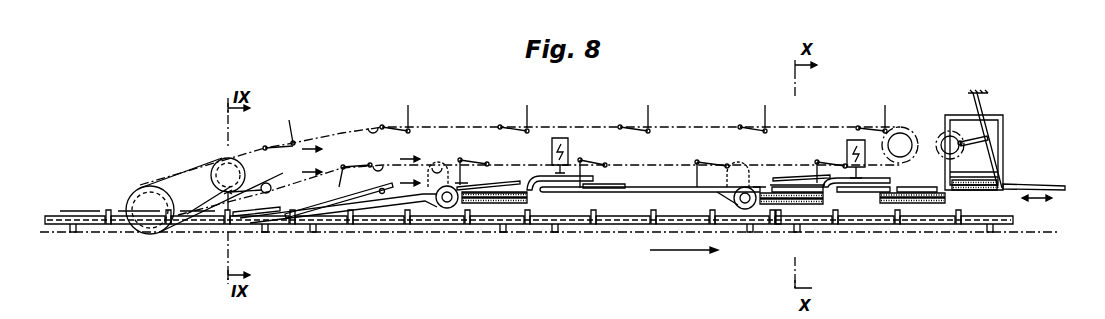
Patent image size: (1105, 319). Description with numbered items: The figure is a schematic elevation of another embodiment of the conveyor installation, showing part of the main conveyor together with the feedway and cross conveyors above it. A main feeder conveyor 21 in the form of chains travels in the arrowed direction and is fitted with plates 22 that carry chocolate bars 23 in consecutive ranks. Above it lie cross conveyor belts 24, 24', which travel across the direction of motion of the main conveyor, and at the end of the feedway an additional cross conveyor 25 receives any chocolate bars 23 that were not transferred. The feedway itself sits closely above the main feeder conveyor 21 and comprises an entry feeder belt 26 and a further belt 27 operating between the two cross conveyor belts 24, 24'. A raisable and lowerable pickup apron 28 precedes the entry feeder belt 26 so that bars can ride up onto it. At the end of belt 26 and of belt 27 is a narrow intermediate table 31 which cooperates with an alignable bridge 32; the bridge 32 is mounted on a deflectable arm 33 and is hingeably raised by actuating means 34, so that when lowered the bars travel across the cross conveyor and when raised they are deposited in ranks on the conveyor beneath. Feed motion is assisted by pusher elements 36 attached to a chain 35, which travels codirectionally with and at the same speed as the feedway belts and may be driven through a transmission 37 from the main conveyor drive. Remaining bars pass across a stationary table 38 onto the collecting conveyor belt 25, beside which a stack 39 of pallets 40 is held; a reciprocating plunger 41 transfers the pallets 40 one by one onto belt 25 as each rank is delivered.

The main feeder conveyor 21 is at (570, 234).
The plates 22 is at (430, 222).
The chocolate bars 23 is at (120, 212).
The cross conveyor belt 24 is at (494, 237).
The cross conveyor belt 24' is at (785, 238).
The additional cross conveyor 25 is at (920, 203).
The entry feeder belt 26 is at (375, 198).
The further belt 27 is at (633, 193).
The pickup apron 28 is at (296, 218).
The intermediate table 31 is at (458, 183).
The bridge 32 is at (512, 183).
The deflectable arm 33 is at (572, 174).
The actuating means 34 is at (555, 138).
The chain 35 is at (342, 132).
The pusher elements 36 is at (345, 188).
The transmission 37 is at (180, 167).
The stationary table 38 is at (858, 193).
The stack 39 is at (1002, 148).
The pallets 40 is at (973, 190).
The reciprocating plunger 41 is at (1055, 191).